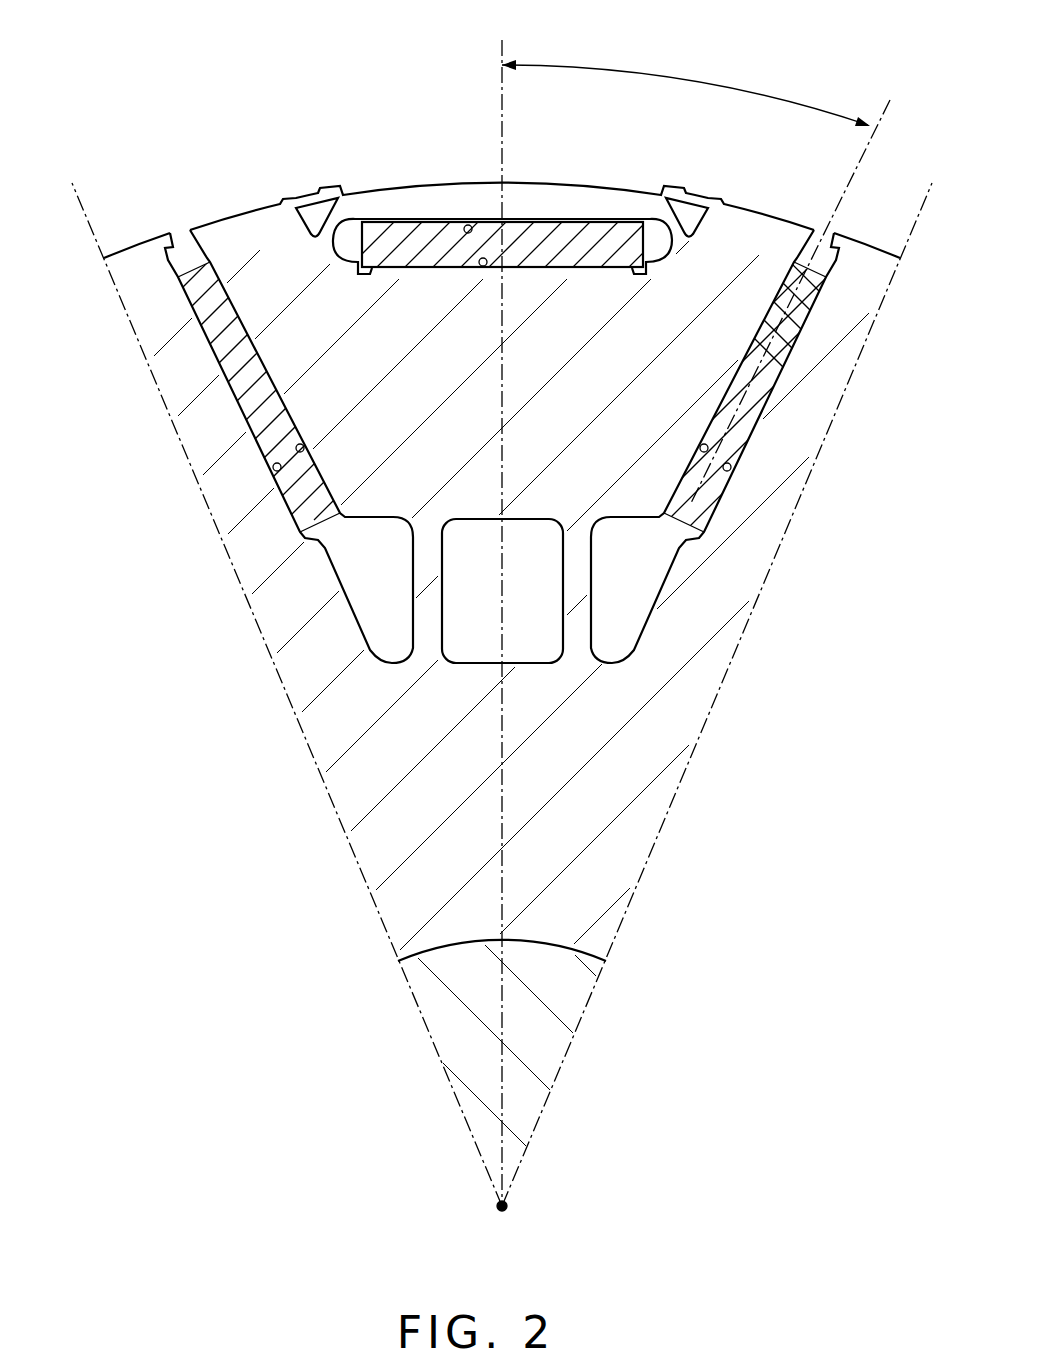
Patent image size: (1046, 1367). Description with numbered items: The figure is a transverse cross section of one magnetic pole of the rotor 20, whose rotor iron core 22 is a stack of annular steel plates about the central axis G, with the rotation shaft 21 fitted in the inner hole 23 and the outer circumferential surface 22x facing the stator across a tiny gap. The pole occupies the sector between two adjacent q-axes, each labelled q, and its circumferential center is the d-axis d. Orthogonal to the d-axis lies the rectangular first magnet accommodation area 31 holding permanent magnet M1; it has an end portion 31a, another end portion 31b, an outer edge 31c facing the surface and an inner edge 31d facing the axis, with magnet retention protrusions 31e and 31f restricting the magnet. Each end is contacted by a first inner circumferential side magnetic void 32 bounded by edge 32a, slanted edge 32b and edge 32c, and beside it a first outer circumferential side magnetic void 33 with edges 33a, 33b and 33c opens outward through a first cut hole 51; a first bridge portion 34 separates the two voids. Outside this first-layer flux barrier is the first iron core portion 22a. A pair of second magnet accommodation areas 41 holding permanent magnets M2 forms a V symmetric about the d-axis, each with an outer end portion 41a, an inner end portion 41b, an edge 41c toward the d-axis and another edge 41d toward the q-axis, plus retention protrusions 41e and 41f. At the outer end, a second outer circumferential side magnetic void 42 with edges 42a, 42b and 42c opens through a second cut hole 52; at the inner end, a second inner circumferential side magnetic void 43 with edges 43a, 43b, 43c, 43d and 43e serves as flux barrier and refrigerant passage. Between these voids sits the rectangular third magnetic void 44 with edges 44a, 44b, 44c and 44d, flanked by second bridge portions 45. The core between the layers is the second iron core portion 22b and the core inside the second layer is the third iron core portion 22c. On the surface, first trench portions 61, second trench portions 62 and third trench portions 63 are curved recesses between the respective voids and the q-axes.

The rotor 20 is at (260, 718).
The rotation shaft 21 is at (558, 1040).
The rotor iron core 22 is at (348, 846).
The first iron core portion 22a is at (520, 198).
The second iron core portion 22b is at (612, 428).
The third iron core portion 22c is at (665, 737).
The outer circumferential surface 22x is at (500, 180).
The inner hole 23 is at (575, 948).
The first magnet accommodation area 31 is at (546, 272).
The end portion 31a is at (382, 222).
The other end portion 31b is at (620, 222).
The outer edge 31c is at (468, 225).
The inner edge 31d is at (483, 267).
The magnet retention protrusion 31e is at (365, 276).
The magnet retention protrusion 31f is at (640, 276).
The first inner circumferential side magnetic void 32 is at (343, 262).
The edge 32a is at (378, 212).
The edge 32b is at (340, 252).
The edge 32c is at (365, 275).
The first outer circumferential side magnetic void 33 is at (305, 232).
The edge 33a is at (346, 198).
The edge 33b is at (330, 205).
The edge 33c is at (293, 208).
The first bridge portion 34 is at (330, 236).
The second magnet accommodation area 41 is at (285, 375).
The end portion 41a is at (228, 262).
The other end portion 41b is at (343, 515).
The edge 41c is at (304, 447).
The other edge 41d is at (276, 471).
The magnet retention protrusion 41e is at (180, 288).
The magnet retention protrusion 41f is at (313, 537).
The second outer circumferential side magnetic void 42 is at (166, 262).
The edge 42a is at (220, 244).
The edge 42b is at (195, 226).
The edge 42c is at (105, 283).
The second inner circumferential side magnetic void 43 is at (365, 598).
The edge 43a is at (392, 516).
The edge 43b is at (410, 552).
The edge 43c is at (387, 665).
The edge 43d is at (385, 640).
The edge 43e is at (330, 550).
The third magnetic void 44 is at (532, 527).
The edge 44a is at (482, 517).
The edge 44b is at (443, 578).
The edge 44c is at (470, 660).
The edge 44d is at (562, 586).
The second bridge portion 45 is at (430, 625).
The first cut hole 51 is at (330, 192).
The second cut hole 52 is at (170, 238).
The first trench portion 61 is at (352, 192).
The second trench portion 62 is at (226, 214).
The third trench portion 63 is at (125, 250).
The permanent magnet M1 is at (435, 267).
The permanent magnet M2 is at (248, 378).
The d-axis d is at (508, 44).
The q-axis q is at (68, 198).
The central axis G is at (508, 1208).